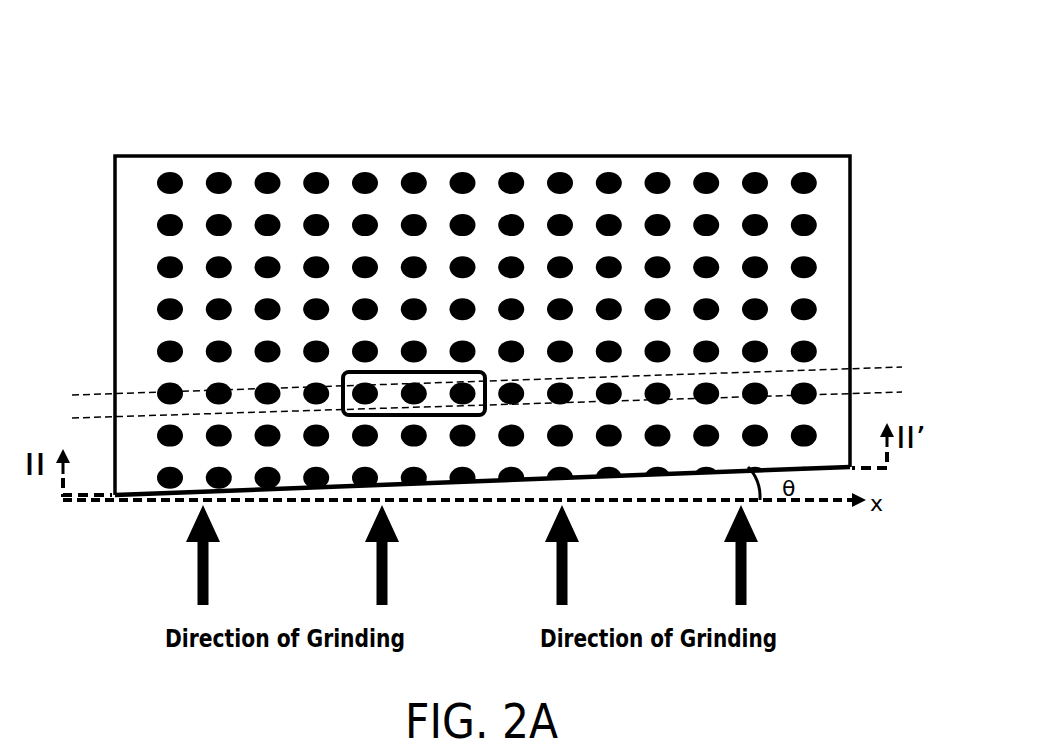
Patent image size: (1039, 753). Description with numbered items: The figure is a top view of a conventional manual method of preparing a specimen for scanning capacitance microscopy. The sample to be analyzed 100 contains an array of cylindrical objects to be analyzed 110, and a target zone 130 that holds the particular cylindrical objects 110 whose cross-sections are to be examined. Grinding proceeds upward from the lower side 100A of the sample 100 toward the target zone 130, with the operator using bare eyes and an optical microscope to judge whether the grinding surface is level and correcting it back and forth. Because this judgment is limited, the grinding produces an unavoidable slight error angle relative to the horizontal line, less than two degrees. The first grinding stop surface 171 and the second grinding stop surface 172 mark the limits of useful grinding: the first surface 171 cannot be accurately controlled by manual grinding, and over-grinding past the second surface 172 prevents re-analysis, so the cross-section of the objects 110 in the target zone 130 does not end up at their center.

The sample to be analyzed 100 is at (155, 46).
The lower side of the sample 100A is at (138, 507).
The cylindrical objects to be analyzed 110 is at (708, 178).
The target zone 130 is at (438, 372).
The first grinding stop surface 171 is at (508, 398).
The second grinding stop surface 172 is at (508, 365).